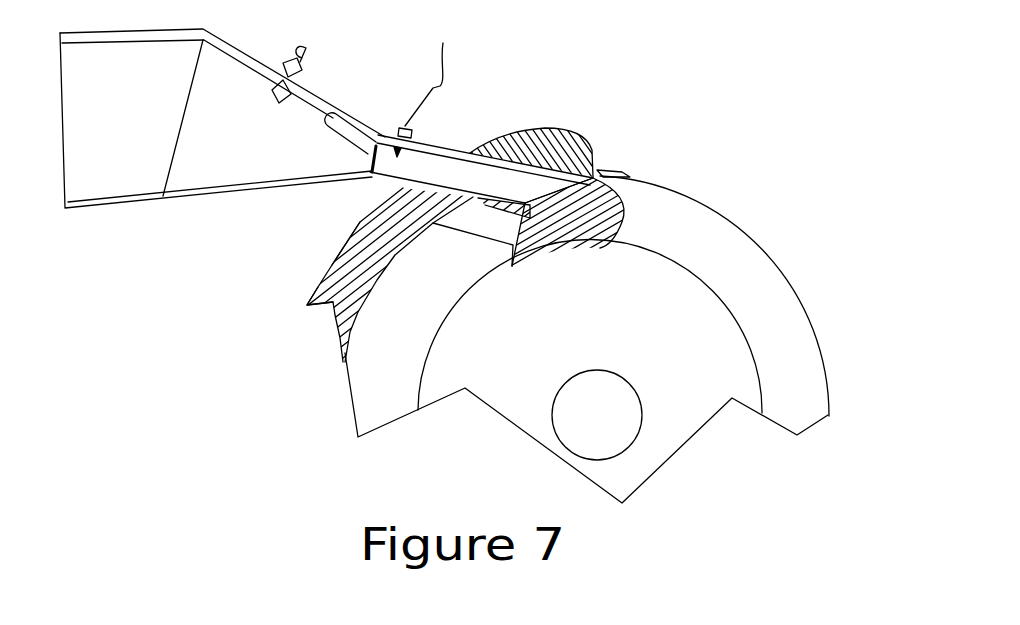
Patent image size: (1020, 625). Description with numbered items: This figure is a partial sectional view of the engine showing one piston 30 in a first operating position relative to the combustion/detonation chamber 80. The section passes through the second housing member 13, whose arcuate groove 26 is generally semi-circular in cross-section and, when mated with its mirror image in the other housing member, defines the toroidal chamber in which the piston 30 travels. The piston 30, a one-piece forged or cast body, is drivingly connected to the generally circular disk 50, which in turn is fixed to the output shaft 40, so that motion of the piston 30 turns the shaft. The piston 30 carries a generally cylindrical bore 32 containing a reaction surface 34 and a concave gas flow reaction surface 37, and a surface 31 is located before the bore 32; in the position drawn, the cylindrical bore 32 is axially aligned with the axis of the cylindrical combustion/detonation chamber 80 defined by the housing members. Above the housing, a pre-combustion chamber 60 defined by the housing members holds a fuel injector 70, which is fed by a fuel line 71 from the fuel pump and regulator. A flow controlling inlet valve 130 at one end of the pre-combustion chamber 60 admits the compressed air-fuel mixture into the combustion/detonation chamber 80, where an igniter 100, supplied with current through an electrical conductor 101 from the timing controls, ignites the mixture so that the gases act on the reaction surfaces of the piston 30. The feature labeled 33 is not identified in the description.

The second housing member 13 is at (352, 270).
The arcuate groove 26 is at (375, 375).
The piston 30 is at (622, 208).
The surface 31 is at (597, 163).
The cylindrical bore 32 is at (533, 137).
The cutting tooth 33 is at (365, 293).
The reaction surface 34 is at (593, 143).
The concave gas flow reaction surface 37 is at (417, 227).
The output shaft 40 is at (610, 410).
The disk 50 is at (662, 313).
The pre-combustion chamber 60 is at (190, 167).
The fuel injector 70 is at (307, 75).
The fuel line 71 is at (308, 46).
The combustion/detonation chamber 80 is at (440, 163).
The igniter 100 is at (418, 135).
The electrical conductor 101 is at (447, 84).
The inlet valve 130 is at (342, 108).